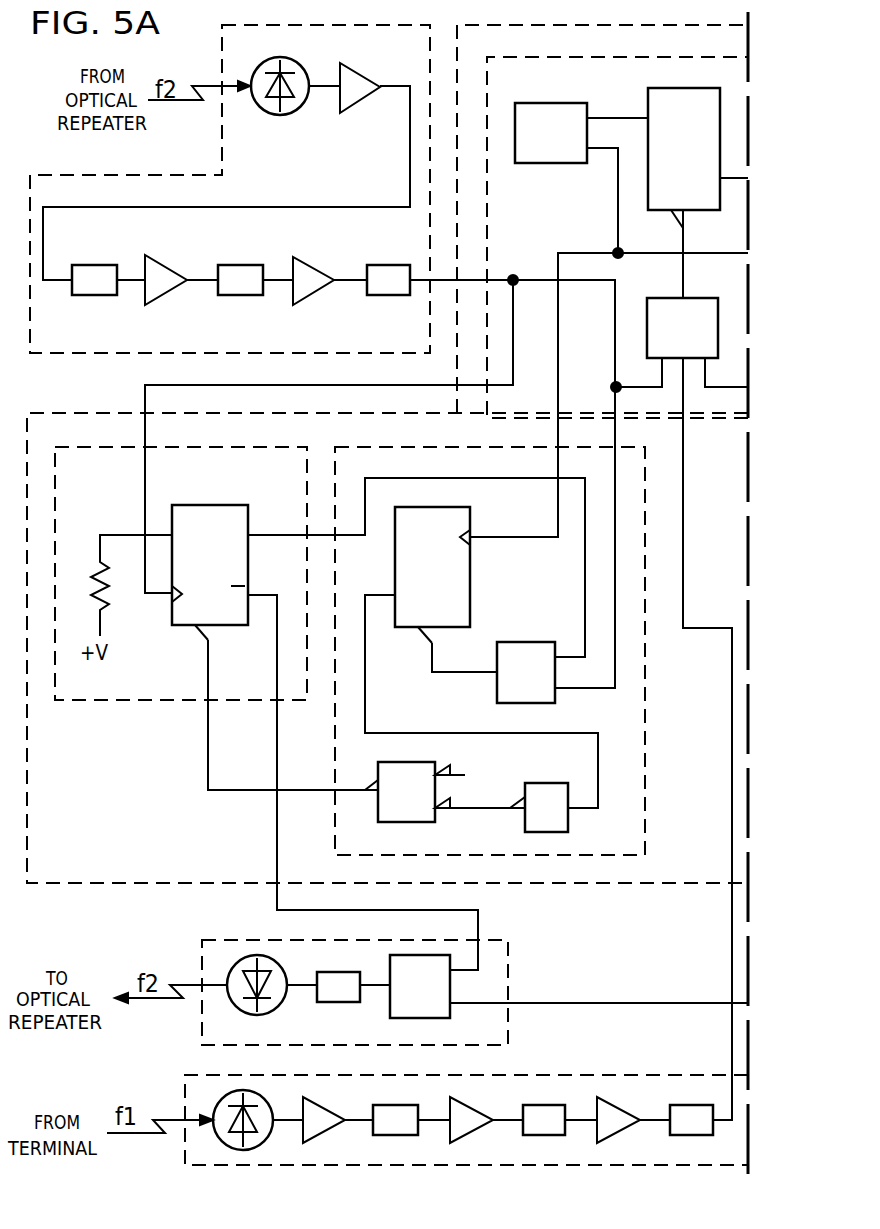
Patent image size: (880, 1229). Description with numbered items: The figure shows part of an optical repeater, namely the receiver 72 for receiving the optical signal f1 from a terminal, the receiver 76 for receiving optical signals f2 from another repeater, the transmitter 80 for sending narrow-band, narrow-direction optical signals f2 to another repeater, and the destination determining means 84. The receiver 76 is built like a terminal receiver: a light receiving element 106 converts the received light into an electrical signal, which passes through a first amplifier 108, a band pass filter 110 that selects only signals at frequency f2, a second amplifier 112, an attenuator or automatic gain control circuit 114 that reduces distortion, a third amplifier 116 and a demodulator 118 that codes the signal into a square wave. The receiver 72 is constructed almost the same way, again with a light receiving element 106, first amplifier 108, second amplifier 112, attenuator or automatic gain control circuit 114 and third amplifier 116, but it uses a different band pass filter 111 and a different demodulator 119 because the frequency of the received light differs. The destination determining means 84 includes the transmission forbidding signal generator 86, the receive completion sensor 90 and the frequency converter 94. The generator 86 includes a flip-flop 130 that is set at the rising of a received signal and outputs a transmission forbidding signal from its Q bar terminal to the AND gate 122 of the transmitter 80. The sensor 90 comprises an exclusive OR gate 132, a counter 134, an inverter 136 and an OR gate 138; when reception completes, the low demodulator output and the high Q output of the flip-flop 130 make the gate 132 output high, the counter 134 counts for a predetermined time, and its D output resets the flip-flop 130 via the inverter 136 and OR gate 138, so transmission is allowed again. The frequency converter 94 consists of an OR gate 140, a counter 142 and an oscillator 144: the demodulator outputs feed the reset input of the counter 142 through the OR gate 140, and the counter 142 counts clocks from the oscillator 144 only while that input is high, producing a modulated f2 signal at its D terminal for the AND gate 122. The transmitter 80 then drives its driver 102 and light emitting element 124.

The receiver 72 is at (548, 1075).
The receiver 76 is at (103, 355).
The transmitter 80 is at (510, 970).
The destination determining means 84 is at (617, 25).
The transmission forbidding signal generator 86 is at (145, 702).
The receive completion sensor 90 is at (645, 783).
The frequency converter 94 is at (522, 57).
The driver 102 is at (346, 975).
The light receiving element 106 is at (297, 111).
The first amplifier 108 is at (362, 72).
The band pass filter 110 is at (106, 266).
The band pass filter 111 is at (392, 1135).
The second amplifier 112 is at (160, 300).
The attenuator or automatic gain control circuit 114 is at (251, 266).
The third amplifier 116 is at (310, 300).
The demodulator 118 is at (400, 266).
The demodulator 119 is at (688, 1135).
The AND gate 122 is at (447, 1010).
The light emitting element 124 is at (277, 1008).
The flip-flop 130 is at (215, 515).
The exclusive OR gate 132 is at (518, 648).
The counter 134 is at (470, 580).
The inverter 136 is at (570, 822).
The OR gate 138 is at (435, 815).
The OR gate 140 is at (698, 305).
The counter 142 is at (655, 100).
The oscillator 144 is at (558, 165).